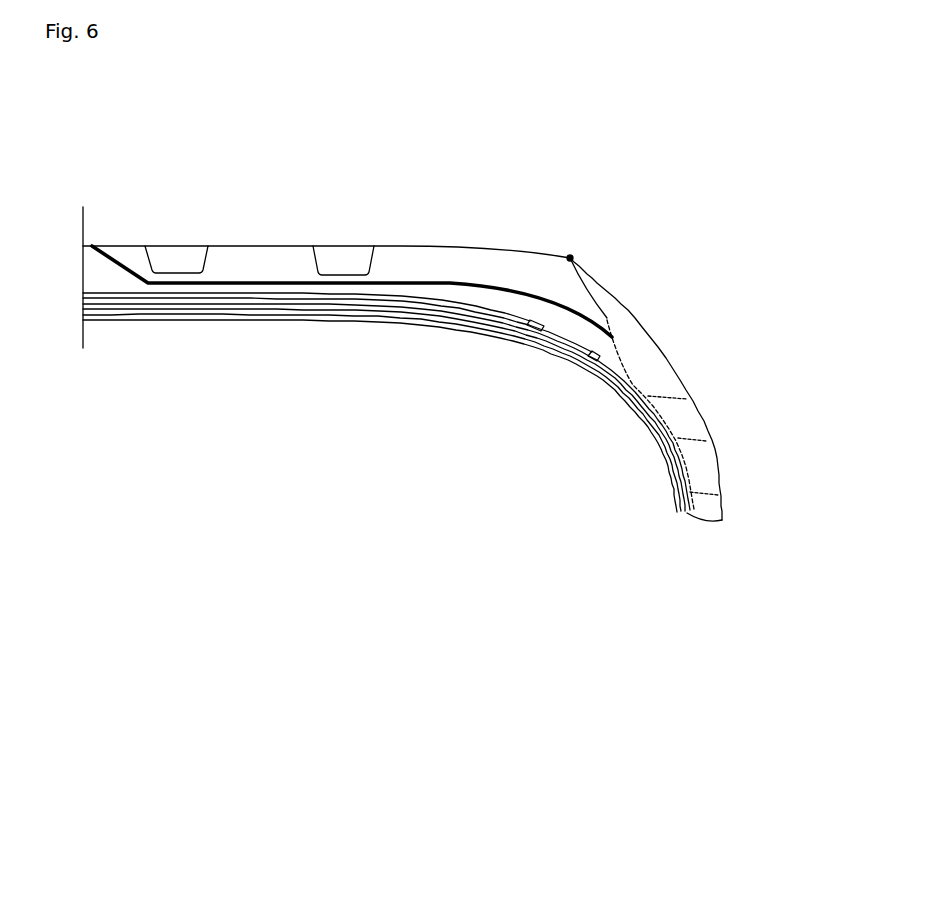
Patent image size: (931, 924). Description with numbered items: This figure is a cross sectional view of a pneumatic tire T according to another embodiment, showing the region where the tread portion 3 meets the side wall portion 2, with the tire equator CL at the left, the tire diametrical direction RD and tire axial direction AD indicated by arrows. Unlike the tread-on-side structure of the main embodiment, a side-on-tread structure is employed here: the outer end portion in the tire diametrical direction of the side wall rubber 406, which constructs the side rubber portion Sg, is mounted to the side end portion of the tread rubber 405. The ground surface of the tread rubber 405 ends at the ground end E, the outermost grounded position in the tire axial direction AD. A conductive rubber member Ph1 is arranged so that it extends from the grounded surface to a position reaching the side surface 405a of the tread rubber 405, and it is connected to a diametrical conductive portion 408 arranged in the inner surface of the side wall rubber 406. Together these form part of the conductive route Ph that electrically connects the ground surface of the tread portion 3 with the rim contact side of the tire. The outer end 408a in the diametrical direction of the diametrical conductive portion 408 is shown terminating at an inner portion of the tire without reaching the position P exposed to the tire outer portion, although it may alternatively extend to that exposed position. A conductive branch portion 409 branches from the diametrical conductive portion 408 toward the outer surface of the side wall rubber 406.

The side wall portion 2 is at (742, 533).
The tread portion 3 is at (231, 226).
The tread rubber 405 is at (300, 252).
The side surface of the tread rubber 405a is at (592, 292).
The side wall rubber 406 is at (658, 362).
The diametrical conductive portion 408 is at (650, 418).
The outer end in the diametrical direction of the diametrical conductive portion 408a is at (612, 318).
The conductive branch portion 409 is at (680, 436).
The tire equator CL is at (84, 264).
The position exposed to the tire outer portion P is at (570, 256).
The ground end E is at (531, 262).
The conductive route Ph is at (673, 256).
The conductive rubber member Ph1 is at (465, 287).
The pneumatic tire T is at (326, 557).
The tire diametrical direction RD is at (196, 687).
The tire axial direction AD is at (291, 857).